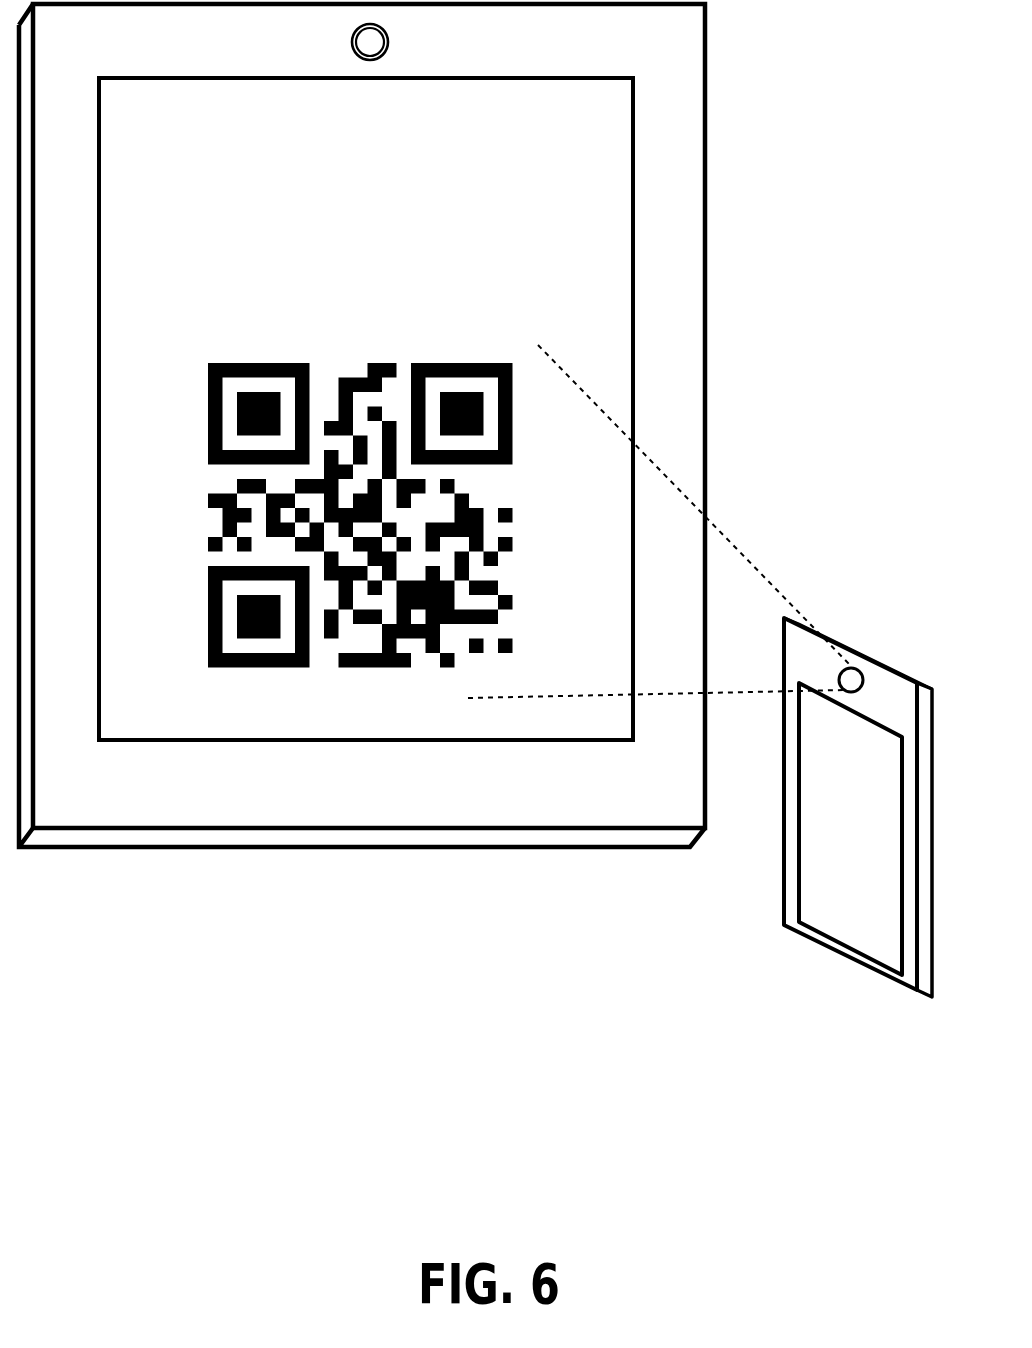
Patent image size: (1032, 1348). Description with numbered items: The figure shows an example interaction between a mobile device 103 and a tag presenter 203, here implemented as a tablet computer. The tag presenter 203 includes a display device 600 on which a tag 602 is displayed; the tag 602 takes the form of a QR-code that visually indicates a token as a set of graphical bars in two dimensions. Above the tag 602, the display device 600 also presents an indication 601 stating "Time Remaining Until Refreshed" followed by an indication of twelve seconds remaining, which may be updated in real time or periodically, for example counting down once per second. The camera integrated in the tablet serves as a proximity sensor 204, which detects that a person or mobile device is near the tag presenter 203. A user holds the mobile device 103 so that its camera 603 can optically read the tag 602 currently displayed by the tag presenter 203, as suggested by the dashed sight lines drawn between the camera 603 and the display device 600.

The mobile device 103 is at (812, 944).
The tag presenter 203 is at (83, 838).
The proximity sensor 204 is at (389, 43).
The display device 600 is at (634, 150).
The indication 601 is at (510, 250).
The tag 602 is at (542, 575).
The camera 603 is at (862, 672).